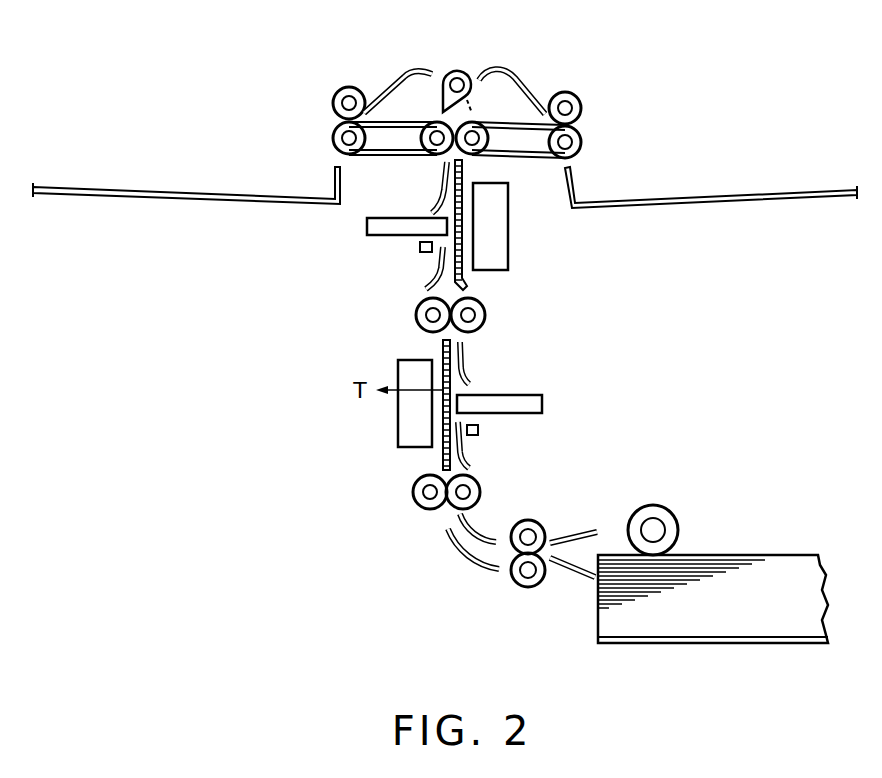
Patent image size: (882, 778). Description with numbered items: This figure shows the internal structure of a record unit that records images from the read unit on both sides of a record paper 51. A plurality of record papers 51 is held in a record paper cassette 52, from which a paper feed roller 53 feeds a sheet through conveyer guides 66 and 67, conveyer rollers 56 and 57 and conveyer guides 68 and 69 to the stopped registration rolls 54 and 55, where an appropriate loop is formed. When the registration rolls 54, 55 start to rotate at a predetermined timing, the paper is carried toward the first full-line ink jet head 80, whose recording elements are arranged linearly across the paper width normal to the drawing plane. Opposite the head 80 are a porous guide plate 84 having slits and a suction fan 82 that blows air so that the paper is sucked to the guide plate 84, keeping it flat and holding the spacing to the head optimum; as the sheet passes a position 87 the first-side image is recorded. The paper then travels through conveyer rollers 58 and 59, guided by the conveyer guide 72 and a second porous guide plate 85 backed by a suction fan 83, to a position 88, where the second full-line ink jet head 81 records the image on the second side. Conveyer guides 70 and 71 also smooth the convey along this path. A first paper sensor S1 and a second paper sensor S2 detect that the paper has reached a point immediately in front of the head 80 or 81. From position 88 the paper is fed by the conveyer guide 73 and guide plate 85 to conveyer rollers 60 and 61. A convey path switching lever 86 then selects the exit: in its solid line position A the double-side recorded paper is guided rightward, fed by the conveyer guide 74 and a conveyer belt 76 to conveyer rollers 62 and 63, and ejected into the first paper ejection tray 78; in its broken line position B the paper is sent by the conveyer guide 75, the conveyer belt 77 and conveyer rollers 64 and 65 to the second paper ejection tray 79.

The record paper 51 is at (782, 558).
The record paper cassette 52 is at (700, 643).
The paper feed roller 53 is at (668, 512).
The registration roll 54 is at (412, 492).
The registration roll 55 is at (482, 492).
The conveyer roller 56 is at (540, 523).
The conveyer roller 57 is at (520, 588).
The conveyer roller 58 is at (416, 315).
The conveyer roller 59 is at (485, 315).
The conveyer roller 60 is at (477, 127).
The conveyer roller 61 is at (432, 125).
The conveyer roller 62 is at (580, 107).
The conveyer roller 63 is at (582, 143).
The conveyer roller 64 is at (333, 98).
The conveyer roller 65 is at (332, 142).
The conveyer guide 66 is at (585, 532).
The conveyer guide 67 is at (575, 566).
The conveyer guide 68 is at (478, 532).
The conveyer guide 69 is at (468, 572).
The conveyer guide 70 is at (468, 455).
The conveyer guide 71 is at (465, 362).
The conveyer guide 72 is at (425, 275).
The conveyer guide 73 is at (440, 180).
The conveyer guide 74 is at (527, 82).
The conveyer guide 75 is at (388, 87).
The conveyer belt 76 is at (543, 163).
The conveyer belt 77 is at (370, 160).
The first paper ejection tray 78 is at (723, 197).
The second paper ejection tray 79 is at (173, 192).
The full-line ink jet head 80 is at (525, 398).
The full-line ink jet head 81 is at (367, 226).
The suction fan 82 is at (398, 425).
The suction fan 83 is at (500, 235).
The porous guide plate 84 is at (443, 345).
The porous guide plate 85 is at (465, 170).
The convey path switching lever 86 is at (458, 70).
The position 87 is at (453, 407).
The position 88 is at (437, 215).
The first paper sensor S1 is at (480, 430).
The second paper sensor S2 is at (418, 247).
The solid line position A is at (443, 78).
The broken line position B is at (488, 77).